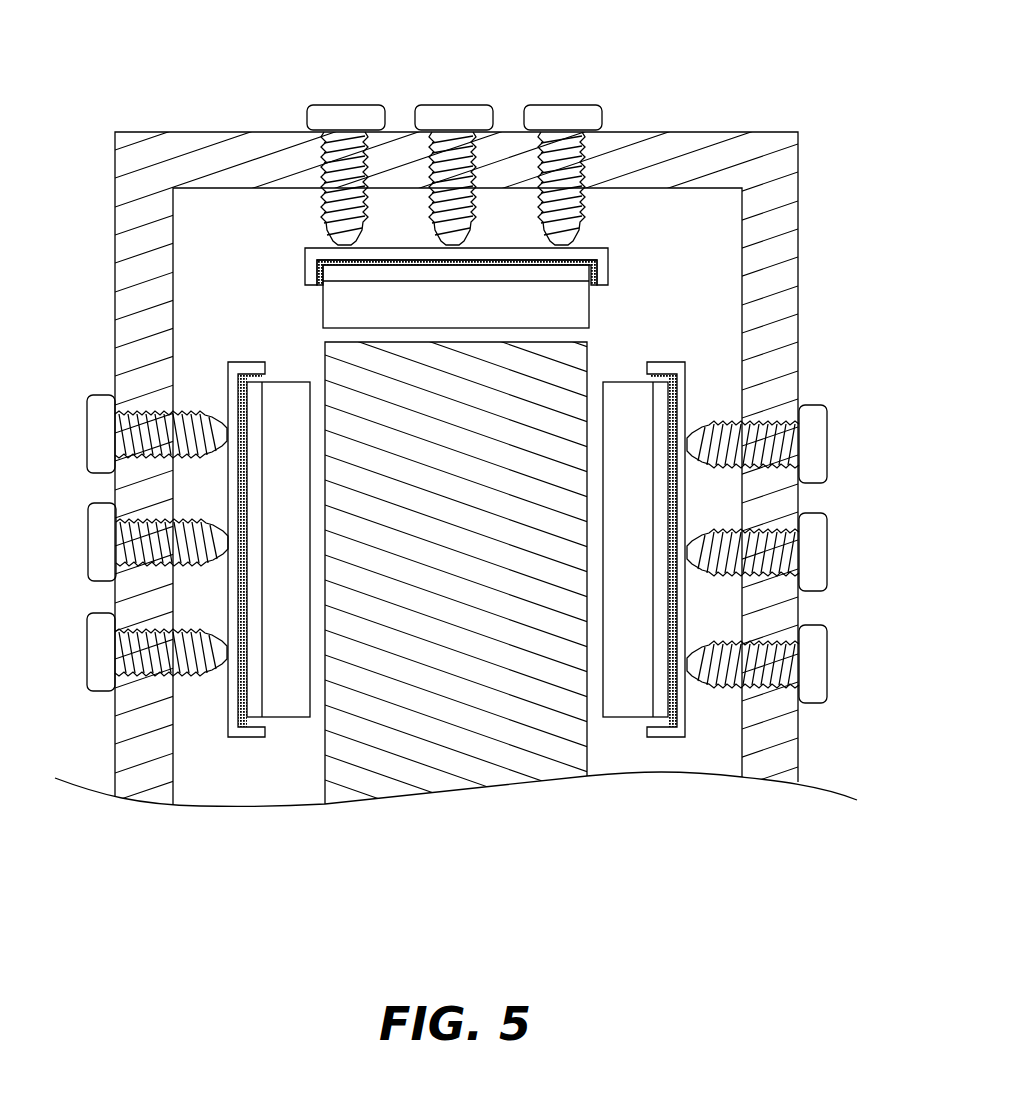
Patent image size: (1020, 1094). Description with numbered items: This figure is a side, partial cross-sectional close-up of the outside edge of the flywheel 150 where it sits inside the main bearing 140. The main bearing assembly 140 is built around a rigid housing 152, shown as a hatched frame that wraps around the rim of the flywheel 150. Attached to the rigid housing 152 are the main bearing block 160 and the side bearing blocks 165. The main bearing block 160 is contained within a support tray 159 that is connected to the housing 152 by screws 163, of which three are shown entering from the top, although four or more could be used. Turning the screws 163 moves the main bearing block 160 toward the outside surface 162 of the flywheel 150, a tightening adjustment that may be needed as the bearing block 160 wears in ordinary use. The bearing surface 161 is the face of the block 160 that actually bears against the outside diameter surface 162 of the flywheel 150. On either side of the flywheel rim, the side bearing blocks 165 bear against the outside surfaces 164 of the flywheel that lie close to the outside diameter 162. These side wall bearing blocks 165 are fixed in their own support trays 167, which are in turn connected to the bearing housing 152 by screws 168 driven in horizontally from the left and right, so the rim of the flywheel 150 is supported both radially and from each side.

The main bearing 140 is at (708, 130).
The flywheel 150 is at (445, 765).
The rigid housing 152 is at (180, 150).
The support tray 159 is at (390, 248).
The main bearing block 160 is at (580, 305).
The bearing surface 161 is at (317, 290).
The outside surface 162 is at (490, 348).
The screws 163 is at (345, 148).
The outside surfaces 164 is at (340, 385).
The side bearing blocks 165 is at (288, 508).
The support trays 167 is at (238, 362).
The screws 168 is at (102, 455).